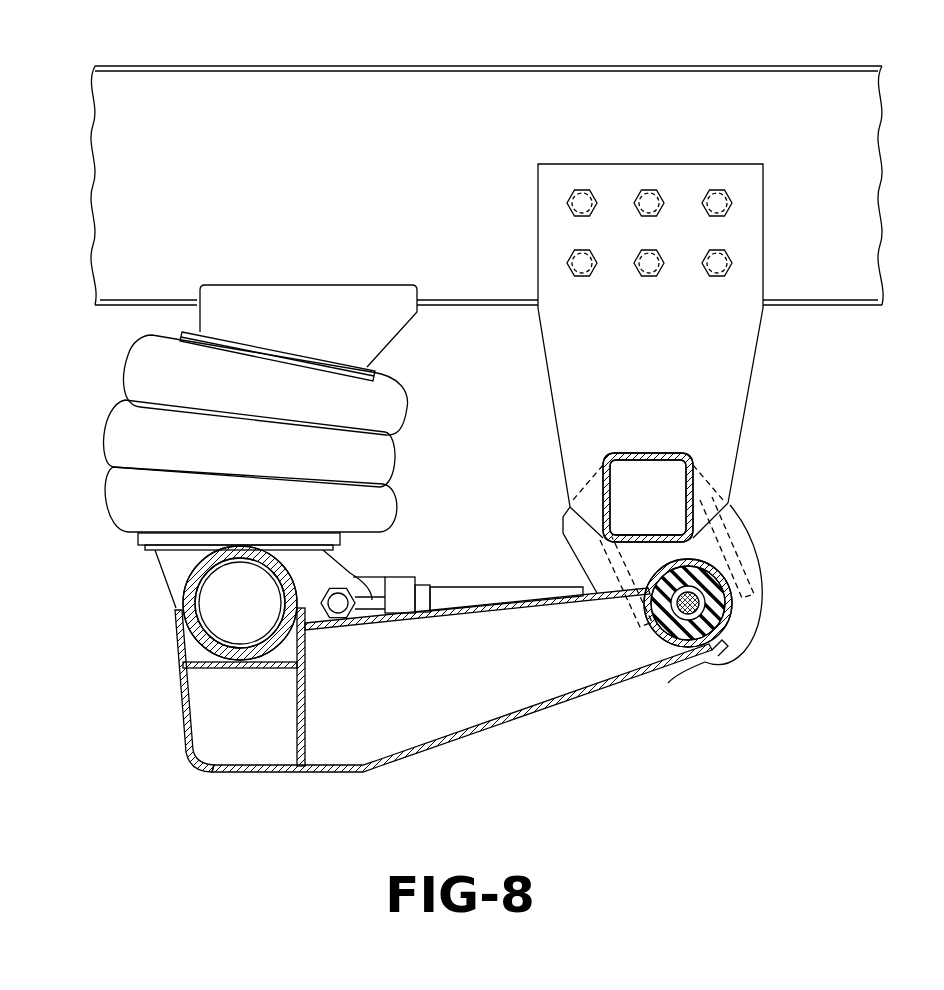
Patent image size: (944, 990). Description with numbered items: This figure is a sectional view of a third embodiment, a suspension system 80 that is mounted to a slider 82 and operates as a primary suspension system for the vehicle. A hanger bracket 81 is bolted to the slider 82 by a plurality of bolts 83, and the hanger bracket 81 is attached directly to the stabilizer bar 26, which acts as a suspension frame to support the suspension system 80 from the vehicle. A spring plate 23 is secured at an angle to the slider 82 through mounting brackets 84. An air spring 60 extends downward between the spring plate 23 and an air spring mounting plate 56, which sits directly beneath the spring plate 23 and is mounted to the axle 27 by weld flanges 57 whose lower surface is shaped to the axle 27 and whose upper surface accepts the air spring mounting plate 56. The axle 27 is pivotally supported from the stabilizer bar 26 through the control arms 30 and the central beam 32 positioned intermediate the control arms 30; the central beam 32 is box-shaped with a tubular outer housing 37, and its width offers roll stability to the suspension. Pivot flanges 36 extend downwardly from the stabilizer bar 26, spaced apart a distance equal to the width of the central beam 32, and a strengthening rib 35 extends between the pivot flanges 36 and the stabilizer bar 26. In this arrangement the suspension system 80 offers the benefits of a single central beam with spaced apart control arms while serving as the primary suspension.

The slider 82 is at (310, 95).
The bolts 83 is at (578, 203).
The hanger bracket 81 is at (727, 387).
The mounting brackets 84 is at (313, 300).
The spring plate 23 is at (368, 380).
The air spring 60 is at (126, 426).
The stabilizer bar 26 is at (646, 452).
The air spring mounting plate 56 is at (150, 553).
The weld flanges 57 is at (178, 586).
The axle 27 is at (200, 645).
The control arms 30 is at (480, 590).
The central beam 32 is at (506, 748).
The strengthening rib 35 is at (722, 549).
The tubular outer housing 37 is at (725, 621).
The pivot flanges 36 is at (722, 656).
The suspension system 80 is at (448, 602).